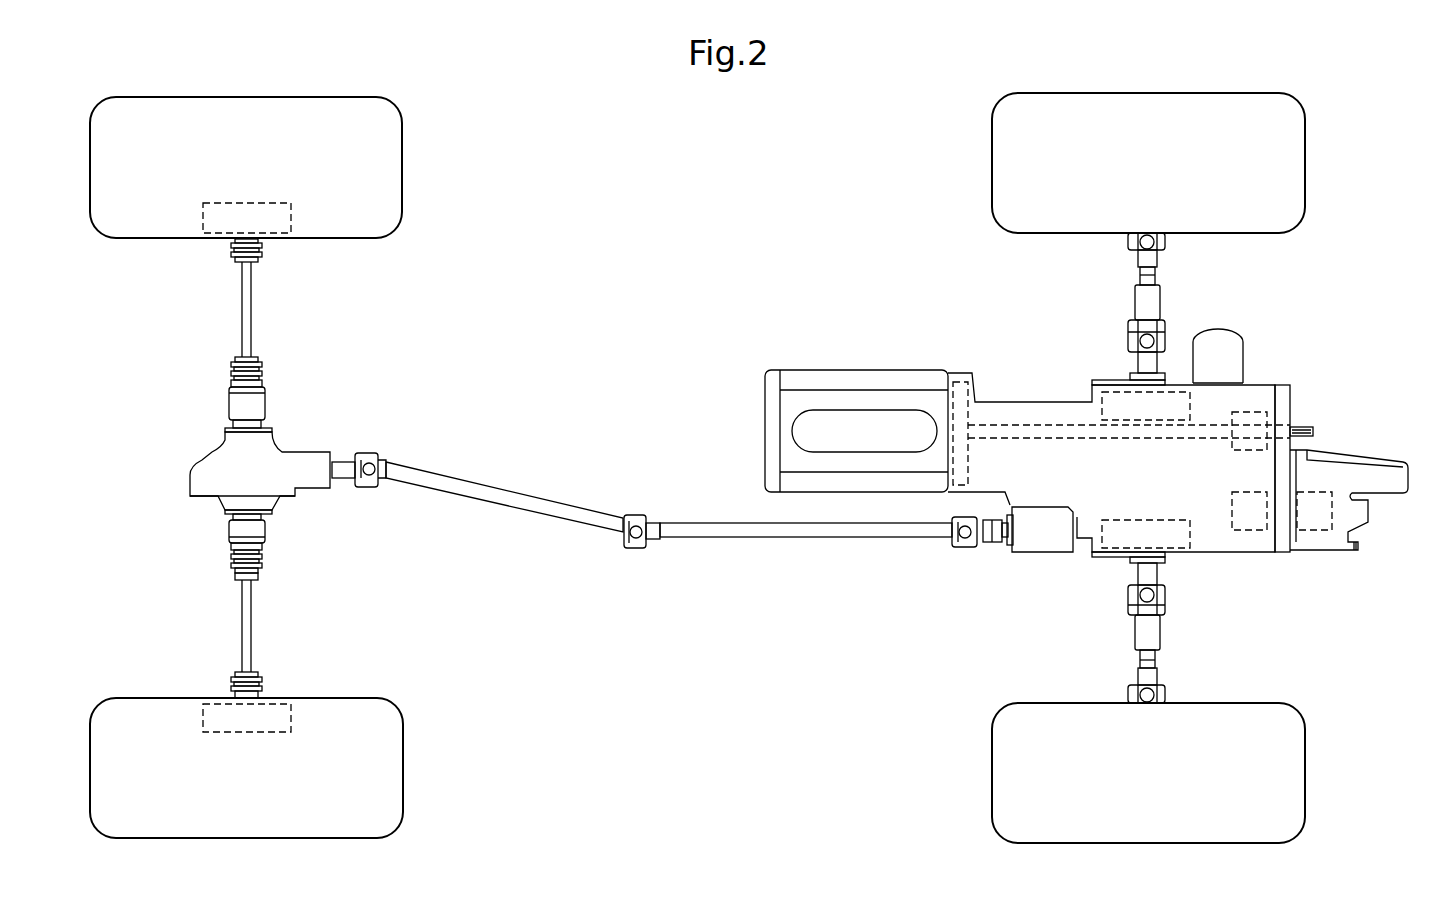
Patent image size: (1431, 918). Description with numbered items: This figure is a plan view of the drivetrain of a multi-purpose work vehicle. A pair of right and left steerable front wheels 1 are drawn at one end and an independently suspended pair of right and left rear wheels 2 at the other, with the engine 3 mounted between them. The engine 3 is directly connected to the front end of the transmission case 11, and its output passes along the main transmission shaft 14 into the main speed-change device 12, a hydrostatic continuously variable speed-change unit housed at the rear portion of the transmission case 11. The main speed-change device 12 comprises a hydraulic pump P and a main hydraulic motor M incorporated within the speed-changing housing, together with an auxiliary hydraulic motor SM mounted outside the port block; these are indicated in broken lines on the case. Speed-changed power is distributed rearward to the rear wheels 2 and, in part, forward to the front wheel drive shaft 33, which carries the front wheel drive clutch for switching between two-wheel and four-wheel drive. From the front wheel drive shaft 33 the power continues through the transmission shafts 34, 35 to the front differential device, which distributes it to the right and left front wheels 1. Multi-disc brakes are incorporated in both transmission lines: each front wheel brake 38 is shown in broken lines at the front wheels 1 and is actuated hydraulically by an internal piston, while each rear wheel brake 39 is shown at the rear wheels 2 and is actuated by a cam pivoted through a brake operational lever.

The front wheels 1 is at (392, 179).
The rear wheels 2 is at (1003, 170).
The engine 3 is at (865, 378).
The transmission case 11 is at (1007, 402).
The main speed-change device 12 is at (1350, 450).
The main transmission shaft 14 is at (1083, 438).
The front wheel drive shaft 33 is at (737, 540).
The transmission shaft 34 is at (505, 502).
The transmission shaft 35 is at (207, 450).
The front wheel brake 38 is at (243, 203).
The rear wheel brake 39 is at (1110, 378).
The hydraulic pump P is at (1250, 410).
The main hydraulic motor M is at (1253, 532).
The auxiliary hydraulic motor SM is at (1318, 533).